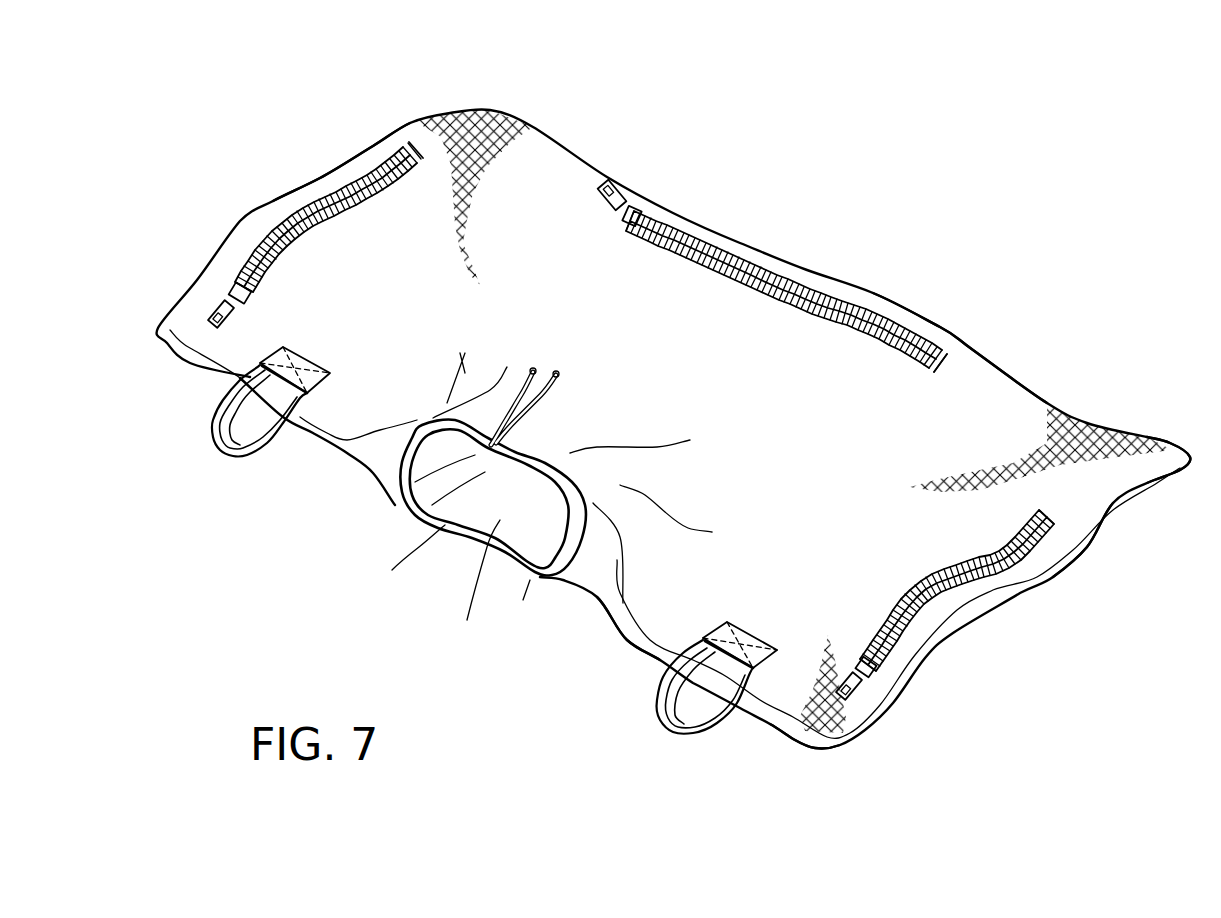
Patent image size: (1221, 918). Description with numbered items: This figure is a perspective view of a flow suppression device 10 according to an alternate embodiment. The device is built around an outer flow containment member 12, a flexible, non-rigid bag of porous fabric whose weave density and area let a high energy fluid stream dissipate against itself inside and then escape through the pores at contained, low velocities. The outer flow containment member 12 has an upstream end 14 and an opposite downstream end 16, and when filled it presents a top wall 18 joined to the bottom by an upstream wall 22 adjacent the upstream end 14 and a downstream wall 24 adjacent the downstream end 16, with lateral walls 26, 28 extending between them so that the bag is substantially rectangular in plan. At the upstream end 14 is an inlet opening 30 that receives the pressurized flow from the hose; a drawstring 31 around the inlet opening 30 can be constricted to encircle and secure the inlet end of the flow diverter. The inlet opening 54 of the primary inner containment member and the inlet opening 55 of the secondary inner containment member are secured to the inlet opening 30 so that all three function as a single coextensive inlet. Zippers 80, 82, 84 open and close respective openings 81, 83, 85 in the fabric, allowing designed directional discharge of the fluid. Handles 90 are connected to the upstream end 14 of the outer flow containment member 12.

The flow suppression device 10 is at (995, 212).
The outer flow containment member 12 is at (460, 147).
The upstream end 14 is at (627, 643).
The downstream end 16 is at (973, 350).
The top wall 18 is at (1120, 437).
The upstream wall 22 is at (770, 730).
The downstream wall 24 is at (1047, 400).
The lateral wall 26 is at (1093, 550).
The lateral wall 28 is at (332, 170).
The inlet opening 30 is at (502, 520).
The drawstring 31 is at (567, 395).
The inlet opening 54 is at (447, 523).
The inlet opening 55 is at (533, 580).
The zipper 80 is at (730, 247).
The opening 81 is at (840, 307).
The zipper 82 is at (997, 570).
The opening 83 is at (923, 607).
The zipper 84 is at (257, 240).
The opening 85 is at (287, 223).
The handle 90 is at (220, 447).